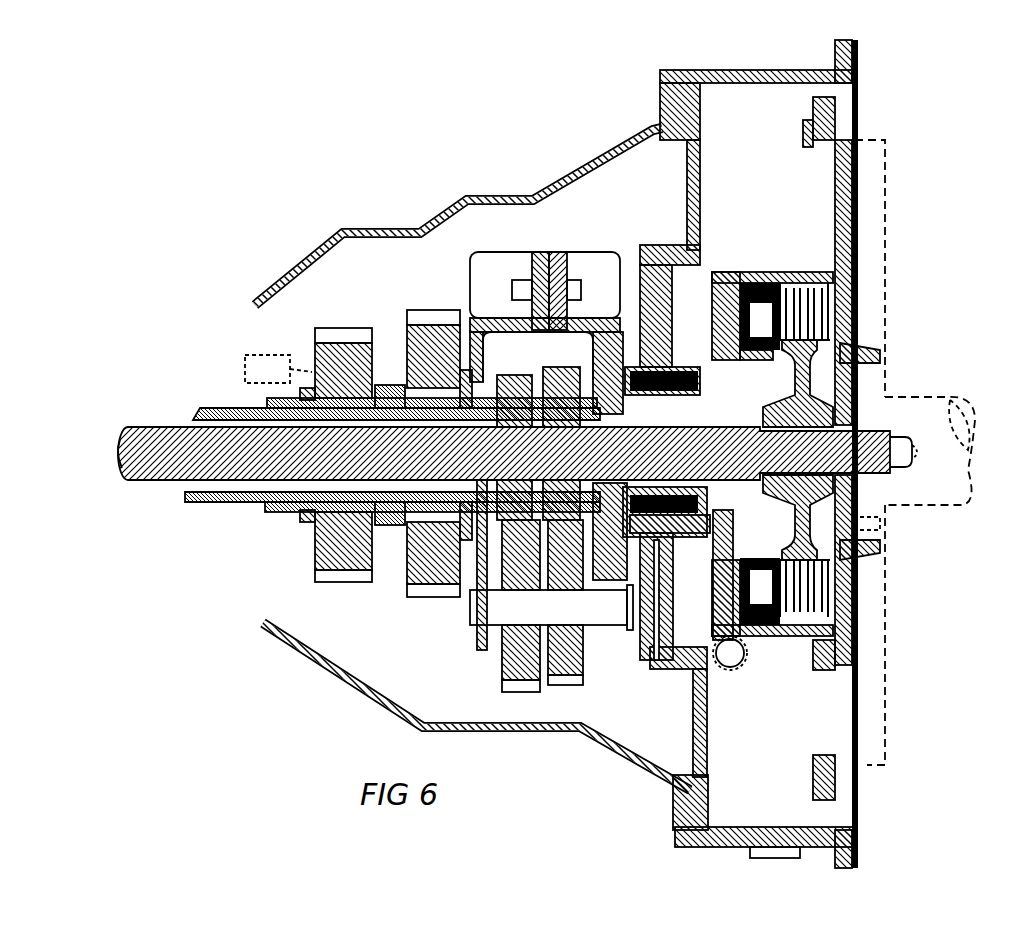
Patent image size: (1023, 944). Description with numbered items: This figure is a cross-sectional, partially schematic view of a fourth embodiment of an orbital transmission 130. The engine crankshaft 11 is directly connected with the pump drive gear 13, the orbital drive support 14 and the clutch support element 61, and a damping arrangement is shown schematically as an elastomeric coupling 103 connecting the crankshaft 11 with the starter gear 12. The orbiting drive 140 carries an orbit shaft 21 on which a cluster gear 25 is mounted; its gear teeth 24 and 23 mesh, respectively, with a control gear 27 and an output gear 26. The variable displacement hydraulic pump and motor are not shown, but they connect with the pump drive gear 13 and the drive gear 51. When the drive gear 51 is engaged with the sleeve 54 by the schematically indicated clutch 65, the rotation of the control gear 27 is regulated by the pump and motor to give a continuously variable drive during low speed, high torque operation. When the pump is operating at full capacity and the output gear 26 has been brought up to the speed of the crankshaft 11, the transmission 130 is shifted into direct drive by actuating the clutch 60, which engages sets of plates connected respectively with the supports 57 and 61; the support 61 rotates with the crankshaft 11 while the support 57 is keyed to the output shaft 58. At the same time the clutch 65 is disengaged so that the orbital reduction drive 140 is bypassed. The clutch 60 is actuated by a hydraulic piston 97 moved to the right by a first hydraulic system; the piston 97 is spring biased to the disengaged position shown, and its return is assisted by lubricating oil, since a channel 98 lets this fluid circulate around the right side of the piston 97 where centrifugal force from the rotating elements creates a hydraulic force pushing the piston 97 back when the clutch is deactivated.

The engine crankshaft 11 is at (948, 397).
The starter gear 12 is at (858, 118).
The pump drive gear 13 is at (445, 310).
The orbital drive support 14 is at (538, 253).
The orbit shaft 21 is at (470, 605).
The gear teeth 23 is at (590, 660).
The gear teeth 24 is at (505, 665).
The cluster gear 25 is at (545, 665).
The output gear 26 is at (562, 375).
The control gear 27 is at (510, 378).
The drive gear 51 is at (342, 328).
The sleeve 54 is at (225, 410).
The support 57 is at (850, 355).
The output shaft 58 is at (150, 490).
The clutch 60 is at (790, 285).
The clutch support element 61 is at (712, 292).
The clutch 65 is at (283, 381).
The hydraulic piston 97 is at (745, 285).
The channel 98 is at (733, 383).
The elastomeric coupling 103 is at (885, 190).
The transmission 130 is at (485, 165).
The orbiting drive 140 is at (588, 232).